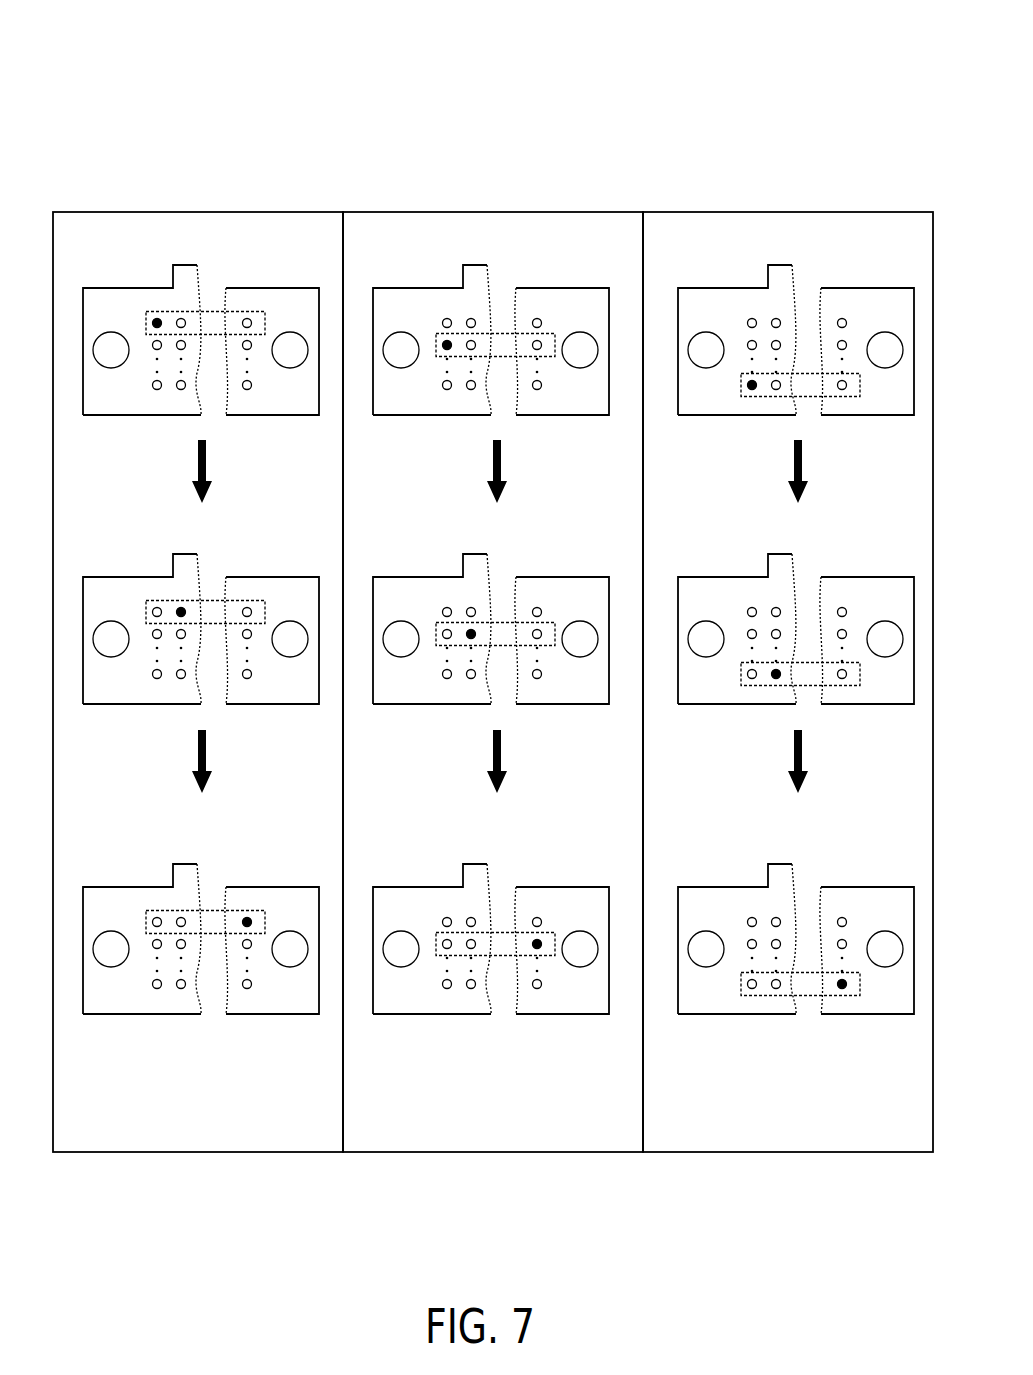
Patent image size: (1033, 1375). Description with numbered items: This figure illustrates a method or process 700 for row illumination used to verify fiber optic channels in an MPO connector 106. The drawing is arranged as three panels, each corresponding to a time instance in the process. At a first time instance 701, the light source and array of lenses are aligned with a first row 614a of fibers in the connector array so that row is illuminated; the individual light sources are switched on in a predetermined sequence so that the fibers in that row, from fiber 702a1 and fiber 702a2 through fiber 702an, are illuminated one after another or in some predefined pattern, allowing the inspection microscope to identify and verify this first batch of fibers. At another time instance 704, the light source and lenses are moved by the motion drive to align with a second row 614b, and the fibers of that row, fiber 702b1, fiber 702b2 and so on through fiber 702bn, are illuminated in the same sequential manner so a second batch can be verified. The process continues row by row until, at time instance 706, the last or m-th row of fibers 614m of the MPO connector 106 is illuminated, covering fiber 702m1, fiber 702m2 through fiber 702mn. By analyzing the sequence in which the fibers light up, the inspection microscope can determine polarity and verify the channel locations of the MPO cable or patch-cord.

The method or process 700 is at (97, 112).
The first time instance 701 is at (202, 212).
The another time instance 704 is at (488, 212).
The time instance 706 is at (817, 212).
The MPO connector 106 is at (108, 287).
The first row 614a is at (155, 318).
The second row 614b is at (460, 340).
The m-th row of fibers 614m is at (767, 397).
The fiber 702a1 is at (157, 323).
The fiber 702a2 is at (181, 612).
The fiber 702an is at (247, 922).
The fiber 702b1 is at (447, 345).
The fiber 702b2 is at (471, 634).
The fiber 702bn is at (537, 944).
The fiber 702m1 is at (752, 385).
The fiber 702m2 is at (776, 674).
The fiber 702mn is at (842, 984).